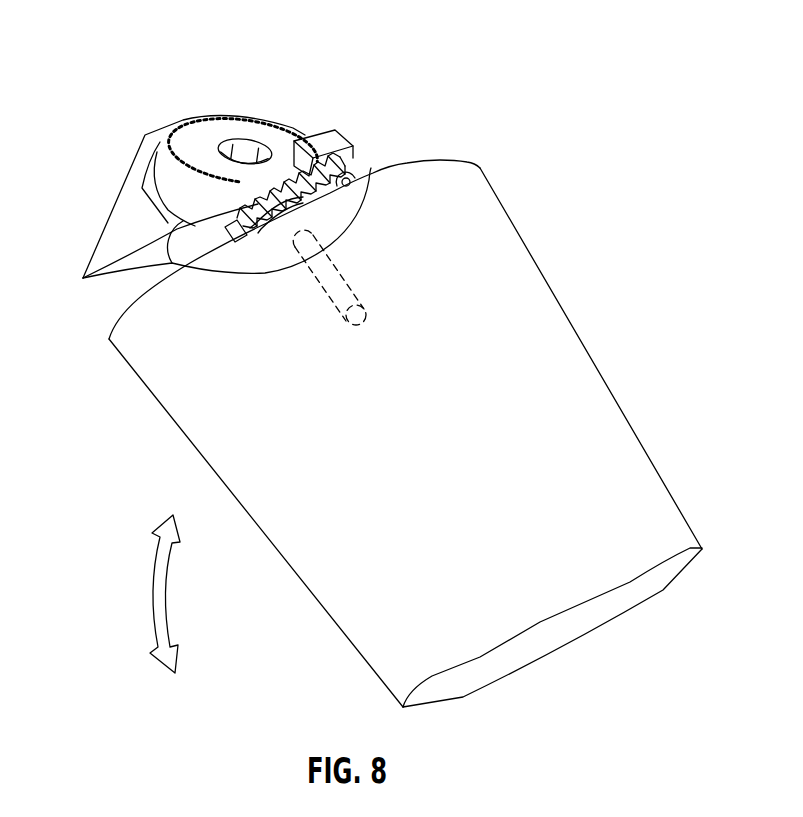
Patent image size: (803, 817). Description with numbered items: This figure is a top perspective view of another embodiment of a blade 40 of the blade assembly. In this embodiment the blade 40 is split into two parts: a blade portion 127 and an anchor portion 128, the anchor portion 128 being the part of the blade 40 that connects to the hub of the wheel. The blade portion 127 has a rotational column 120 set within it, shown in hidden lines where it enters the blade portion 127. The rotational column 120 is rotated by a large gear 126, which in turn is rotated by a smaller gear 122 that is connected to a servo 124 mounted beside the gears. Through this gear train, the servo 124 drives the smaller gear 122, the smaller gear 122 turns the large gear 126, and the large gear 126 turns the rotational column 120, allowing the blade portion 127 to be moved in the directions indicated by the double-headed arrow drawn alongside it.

The blade 40 is at (505, 118).
The rotational column 120 is at (325, 288).
The smaller gear 122 is at (347, 147).
The servo 124 is at (317, 145).
The large gear 126 is at (290, 170).
The blade portion 127 is at (606, 452).
The anchor portion 128 is at (122, 217).